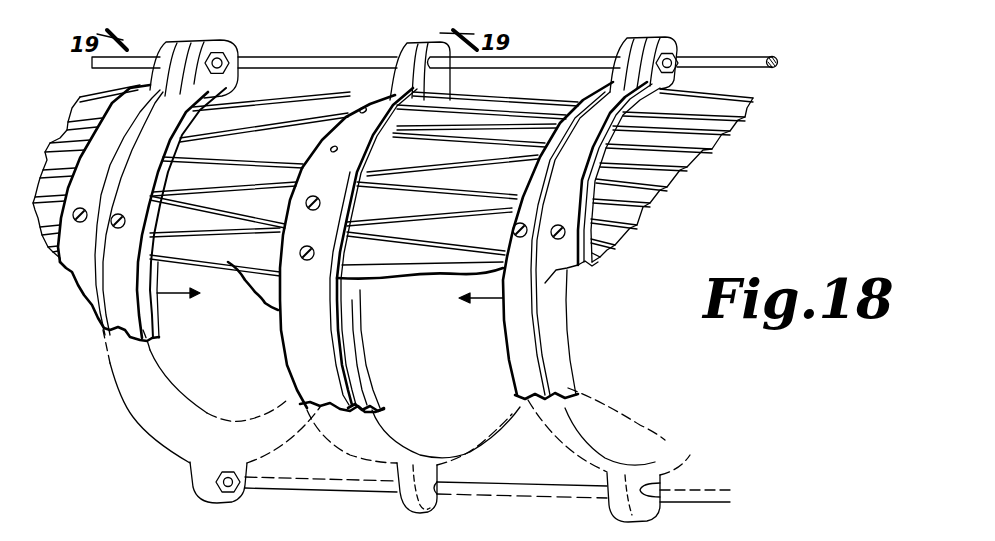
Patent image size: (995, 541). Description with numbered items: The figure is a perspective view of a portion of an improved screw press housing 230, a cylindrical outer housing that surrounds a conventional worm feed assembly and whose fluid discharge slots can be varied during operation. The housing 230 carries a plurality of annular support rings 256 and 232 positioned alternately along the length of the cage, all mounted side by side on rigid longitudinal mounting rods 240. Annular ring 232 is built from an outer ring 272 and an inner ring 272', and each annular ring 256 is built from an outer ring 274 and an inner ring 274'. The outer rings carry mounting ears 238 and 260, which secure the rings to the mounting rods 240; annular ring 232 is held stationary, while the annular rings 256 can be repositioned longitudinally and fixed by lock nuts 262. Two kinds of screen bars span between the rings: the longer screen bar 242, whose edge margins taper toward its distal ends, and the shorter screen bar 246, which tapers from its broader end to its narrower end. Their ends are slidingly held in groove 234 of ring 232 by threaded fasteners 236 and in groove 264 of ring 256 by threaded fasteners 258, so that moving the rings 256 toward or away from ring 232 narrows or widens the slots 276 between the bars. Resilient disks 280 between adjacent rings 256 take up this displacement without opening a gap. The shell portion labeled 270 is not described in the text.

The cylindrical outer housing 230 is at (125, 434).
The annular ring 232 is at (270, 342).
The groove 234 is at (345, 298).
The threaded fasteners 236 is at (312, 145).
The mounting ears 238 is at (407, 44).
The mounting rods 240 is at (517, 57).
The screen bar 242 is at (220, 262).
The screen bar 246 is at (463, 237).
The annular ring 256 is at (92, 290).
The threaded fasteners 258 is at (110, 230).
The mounting ears 260 is at (233, 43).
The lock nuts 262 is at (235, 73).
The groove 264 is at (147, 340).
The shell 270 is at (688, 229).
The outer ring 272 is at (446, 432).
The inner ring 272' is at (400, 349).
The outer ring 274 is at (368, 266).
The inner ring 274' is at (397, 333).
The slots 276 is at (457, 142).
The resilient disks 280 is at (113, 123).